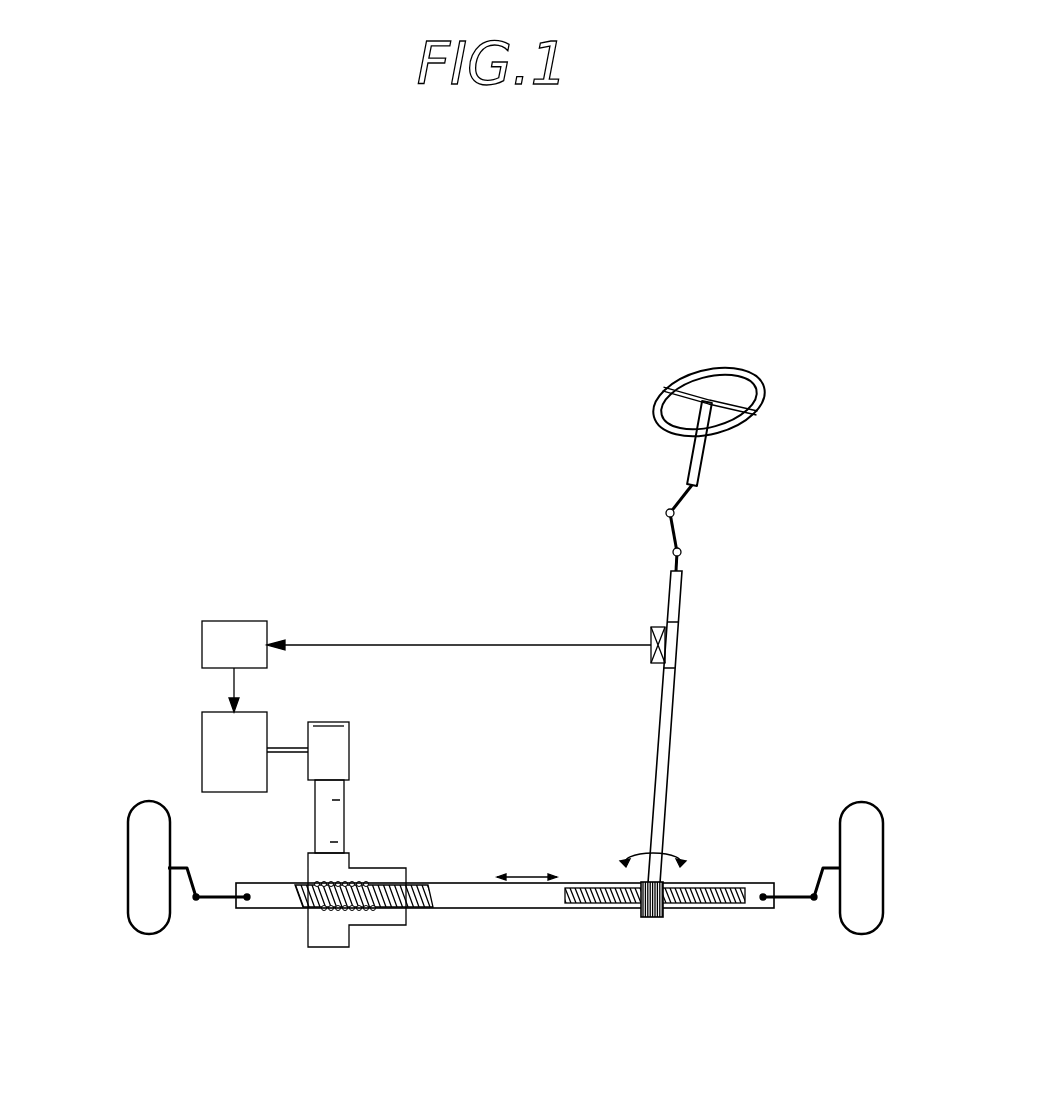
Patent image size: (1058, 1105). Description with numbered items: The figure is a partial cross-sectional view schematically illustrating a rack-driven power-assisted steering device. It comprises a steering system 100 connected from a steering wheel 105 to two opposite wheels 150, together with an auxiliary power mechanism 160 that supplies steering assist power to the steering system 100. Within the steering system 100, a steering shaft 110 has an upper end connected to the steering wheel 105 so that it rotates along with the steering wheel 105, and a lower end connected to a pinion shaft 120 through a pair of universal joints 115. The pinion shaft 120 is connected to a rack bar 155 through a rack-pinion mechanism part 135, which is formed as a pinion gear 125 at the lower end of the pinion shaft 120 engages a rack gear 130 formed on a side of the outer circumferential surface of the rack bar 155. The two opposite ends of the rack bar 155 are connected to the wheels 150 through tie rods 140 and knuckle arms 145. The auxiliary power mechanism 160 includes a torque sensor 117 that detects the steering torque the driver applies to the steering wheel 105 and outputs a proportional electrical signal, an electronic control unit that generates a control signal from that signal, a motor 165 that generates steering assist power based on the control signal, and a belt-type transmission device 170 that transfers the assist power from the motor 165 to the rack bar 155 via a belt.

The steering system 100 is at (760, 366).
The steering wheel 105 is at (655, 388).
The steering shaft 110 is at (704, 450).
The universal joints 115 is at (681, 551).
The torque sensor 117 is at (657, 627).
The pinion shaft 120 is at (673, 697).
The pinion gear 125 is at (652, 920).
The rack gear 130 is at (708, 905).
The rack-pinion mechanism part 135 is at (715, 986).
The tie rods 140 is at (790, 902).
The knuckle arms 145 is at (817, 880).
The wheels 150 is at (140, 838).
The rack bar 155 is at (518, 902).
The auxiliary power mechanism 160 is at (375, 566).
The motor 165 is at (202, 722).
The belt-type transmission device 170 is at (353, 794).